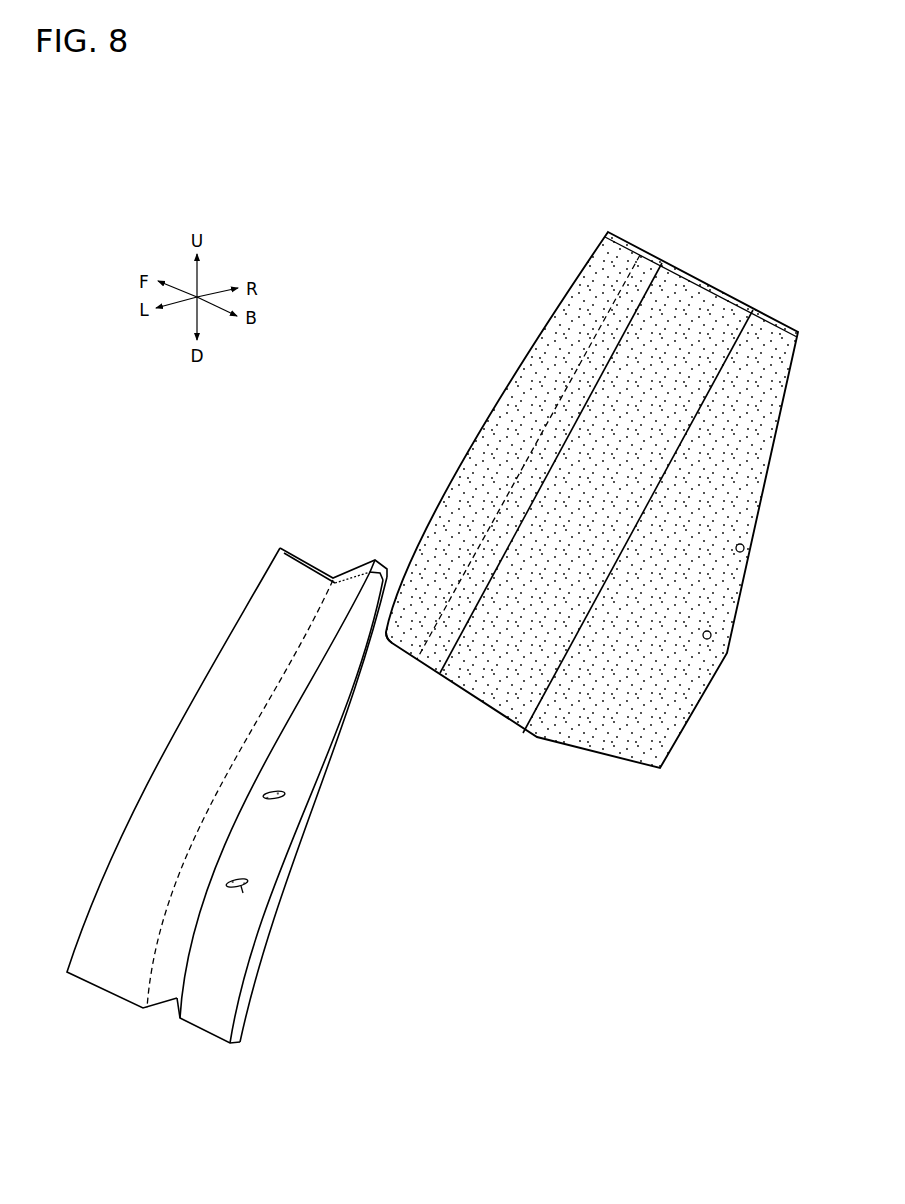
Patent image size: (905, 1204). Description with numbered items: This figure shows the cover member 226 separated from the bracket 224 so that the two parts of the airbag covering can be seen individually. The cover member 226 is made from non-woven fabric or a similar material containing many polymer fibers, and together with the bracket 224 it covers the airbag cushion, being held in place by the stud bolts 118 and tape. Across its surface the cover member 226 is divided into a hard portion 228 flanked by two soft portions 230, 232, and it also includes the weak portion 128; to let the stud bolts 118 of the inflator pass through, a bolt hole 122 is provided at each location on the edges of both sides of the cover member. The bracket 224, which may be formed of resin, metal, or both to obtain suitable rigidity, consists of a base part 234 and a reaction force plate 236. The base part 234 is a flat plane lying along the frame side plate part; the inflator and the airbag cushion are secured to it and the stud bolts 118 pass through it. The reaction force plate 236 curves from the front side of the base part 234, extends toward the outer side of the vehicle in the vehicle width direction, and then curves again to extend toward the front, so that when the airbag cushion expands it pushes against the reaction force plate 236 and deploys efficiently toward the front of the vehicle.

The bolt hole 122 is at (745, 550).
The stud bolts 118 is at (284, 798).
The weak portion 128 is at (442, 645).
The bracket 224 is at (285, 545).
The cover member 226 is at (586, 263).
The hard portion 228 is at (672, 262).
The soft portion 230 is at (611, 230).
The soft portion 232 is at (761, 309).
The base part 234 is at (318, 748).
The reaction force plate 236 is at (212, 722).